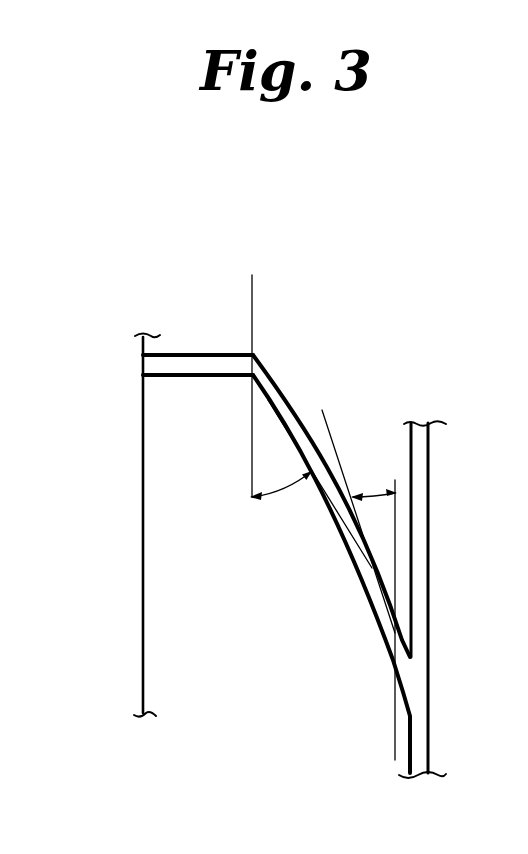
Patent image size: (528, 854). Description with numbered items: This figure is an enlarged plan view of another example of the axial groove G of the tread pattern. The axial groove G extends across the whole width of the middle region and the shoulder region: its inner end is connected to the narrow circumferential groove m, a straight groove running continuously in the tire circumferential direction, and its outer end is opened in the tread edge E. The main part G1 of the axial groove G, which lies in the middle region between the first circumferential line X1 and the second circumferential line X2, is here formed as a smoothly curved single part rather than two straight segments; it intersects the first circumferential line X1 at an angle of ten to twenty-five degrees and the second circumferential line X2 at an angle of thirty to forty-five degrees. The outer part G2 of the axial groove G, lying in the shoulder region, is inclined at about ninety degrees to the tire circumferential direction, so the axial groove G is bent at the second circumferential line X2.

The axial groove G is at (276, 530).
The main part of the axial groove G1 is at (367, 567).
The outer part of the axial groove G2 is at (192, 363).
The tread edge E is at (143, 600).
The narrow circumferential groove m is at (428, 545).
The first circumferential line X1 is at (395, 740).
The second circumferential line X2 is at (252, 340).